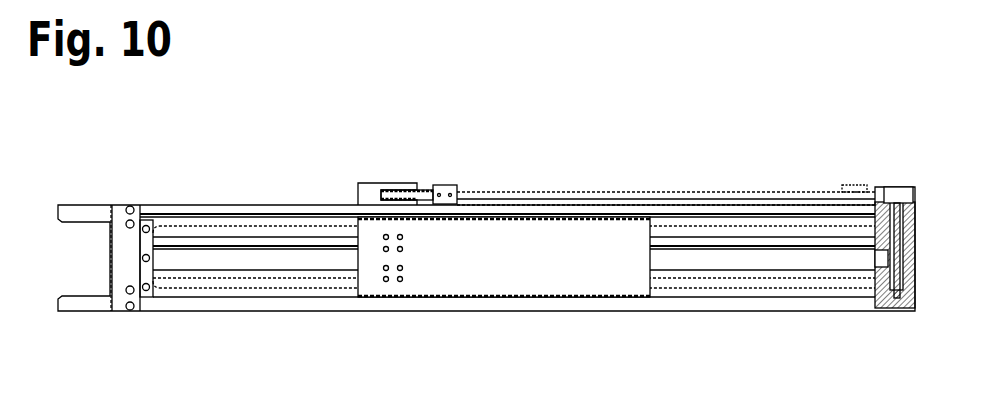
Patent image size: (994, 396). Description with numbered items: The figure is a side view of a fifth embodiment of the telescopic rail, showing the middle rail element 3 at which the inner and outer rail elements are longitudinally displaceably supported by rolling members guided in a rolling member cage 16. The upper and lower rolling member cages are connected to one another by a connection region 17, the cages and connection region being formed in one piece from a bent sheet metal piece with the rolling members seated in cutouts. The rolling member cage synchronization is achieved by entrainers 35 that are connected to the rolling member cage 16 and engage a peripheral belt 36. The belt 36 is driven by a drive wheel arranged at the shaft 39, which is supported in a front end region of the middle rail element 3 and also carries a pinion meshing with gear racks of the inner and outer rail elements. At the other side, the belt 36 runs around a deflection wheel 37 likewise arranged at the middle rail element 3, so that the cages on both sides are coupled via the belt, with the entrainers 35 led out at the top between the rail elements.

The middle rail element 3 is at (238, 213).
The rolling member cage 16 is at (504, 252).
The connection region 17 is at (537, 233).
The entrainer 35 is at (450, 187).
The peripheral belt 36 is at (683, 190).
The deflection wheel 37 is at (403, 187).
The shaft 39 is at (895, 290).